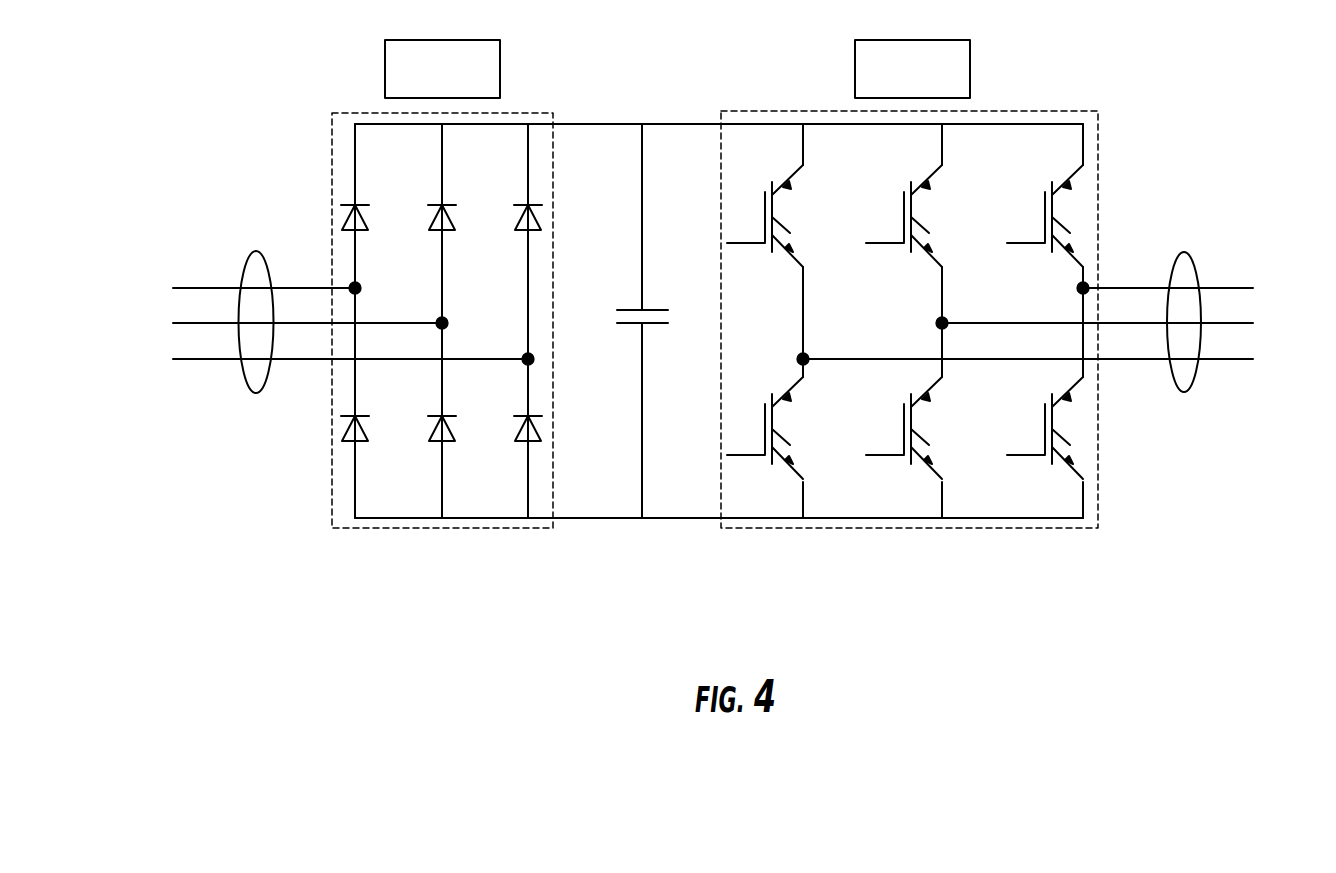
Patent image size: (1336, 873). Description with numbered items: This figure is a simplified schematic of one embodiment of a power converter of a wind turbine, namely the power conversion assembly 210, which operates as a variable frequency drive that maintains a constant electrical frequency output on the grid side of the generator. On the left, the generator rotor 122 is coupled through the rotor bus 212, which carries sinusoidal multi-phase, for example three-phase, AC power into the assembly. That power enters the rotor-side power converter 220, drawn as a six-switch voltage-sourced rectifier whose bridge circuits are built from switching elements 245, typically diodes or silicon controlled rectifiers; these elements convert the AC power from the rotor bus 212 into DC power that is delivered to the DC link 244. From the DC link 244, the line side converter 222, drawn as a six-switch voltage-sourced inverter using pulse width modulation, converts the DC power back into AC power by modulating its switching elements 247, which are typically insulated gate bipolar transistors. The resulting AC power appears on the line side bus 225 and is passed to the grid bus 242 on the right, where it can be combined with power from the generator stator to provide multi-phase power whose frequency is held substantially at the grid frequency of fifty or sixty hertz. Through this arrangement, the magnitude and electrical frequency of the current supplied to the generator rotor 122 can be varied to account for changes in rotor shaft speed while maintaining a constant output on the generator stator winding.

The power conversion assembly 210 is at (1185, 92).
The generator rotor 122 is at (82, 374).
The rotor bus 212 is at (254, 394).
The rotor-side power converter 220 is at (393, 530).
The switching elements 245 is at (462, 428).
The DC link 244 is at (685, 190).
The line side converter 222 is at (1018, 530).
The switching elements 247 is at (897, 467).
The grid bus 242 is at (1283, 376).
The line side bus 225 is at (1185, 252).